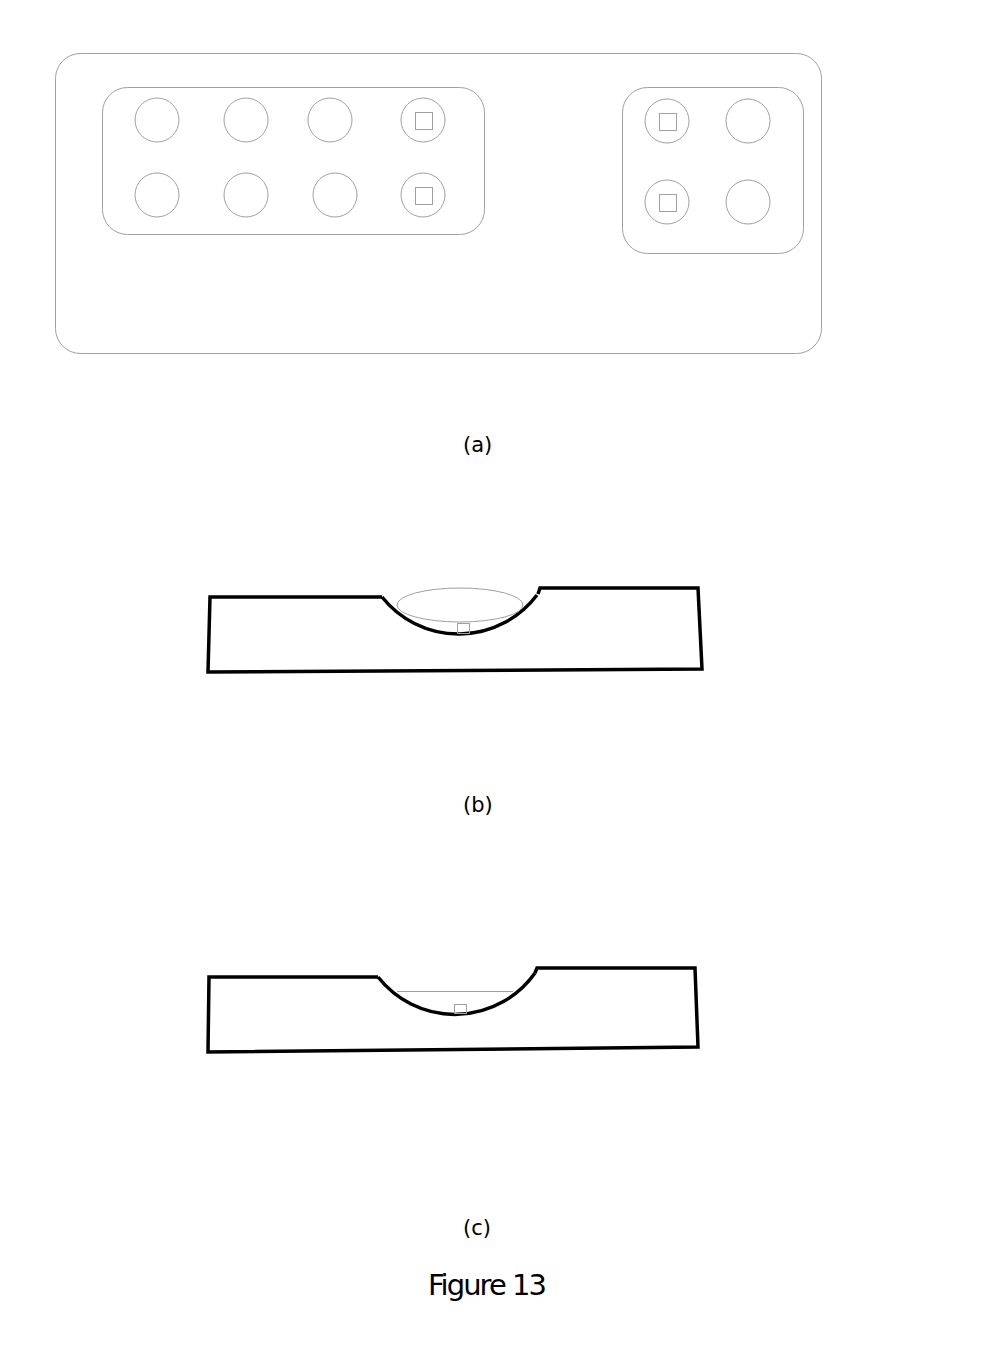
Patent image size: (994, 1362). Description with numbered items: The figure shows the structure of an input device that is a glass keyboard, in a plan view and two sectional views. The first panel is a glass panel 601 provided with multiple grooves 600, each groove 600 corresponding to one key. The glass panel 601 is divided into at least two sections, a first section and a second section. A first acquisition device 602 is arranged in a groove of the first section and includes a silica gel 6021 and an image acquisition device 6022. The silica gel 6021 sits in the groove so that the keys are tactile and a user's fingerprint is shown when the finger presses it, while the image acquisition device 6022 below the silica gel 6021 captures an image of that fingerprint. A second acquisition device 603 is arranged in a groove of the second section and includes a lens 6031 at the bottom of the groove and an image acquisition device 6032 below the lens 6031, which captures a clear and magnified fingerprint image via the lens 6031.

The groove 600 is at (530, 593).
The glass panel 601 is at (513, 71).
The first acquisition device 602 is at (433, 195).
The second acquisition device 603 is at (677, 210).
The silica gel 6021 is at (458, 587).
The image acquisition device 6022 is at (472, 635).
The lens 6031 is at (437, 991).
The image acquisition device 6032 is at (466, 1013).